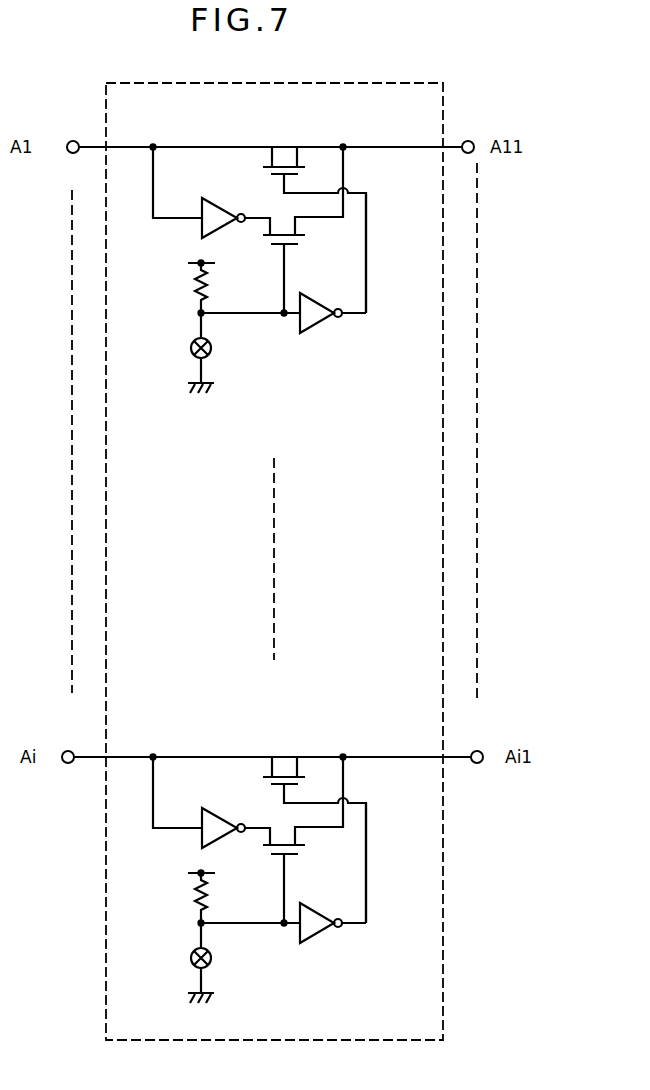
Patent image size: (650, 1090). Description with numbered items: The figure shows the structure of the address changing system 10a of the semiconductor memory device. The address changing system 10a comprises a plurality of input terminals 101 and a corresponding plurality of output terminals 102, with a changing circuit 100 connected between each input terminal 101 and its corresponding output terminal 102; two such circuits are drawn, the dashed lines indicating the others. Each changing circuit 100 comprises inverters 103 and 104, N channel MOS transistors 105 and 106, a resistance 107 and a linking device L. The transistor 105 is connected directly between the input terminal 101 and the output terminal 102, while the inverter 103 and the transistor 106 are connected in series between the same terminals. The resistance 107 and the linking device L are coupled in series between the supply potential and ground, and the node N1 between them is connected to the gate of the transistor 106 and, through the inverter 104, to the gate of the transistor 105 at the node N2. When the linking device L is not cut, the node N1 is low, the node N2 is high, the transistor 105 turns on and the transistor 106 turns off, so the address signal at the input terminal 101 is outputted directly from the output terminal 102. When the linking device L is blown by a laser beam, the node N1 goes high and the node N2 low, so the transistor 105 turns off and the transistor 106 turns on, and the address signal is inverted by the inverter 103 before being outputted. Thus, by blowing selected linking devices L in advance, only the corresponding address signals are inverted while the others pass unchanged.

The address changing system 10a is at (378, 83).
The changing circuit 100 is at (260, 357).
The input terminal 101 is at (66, 143).
The output terminal 102 is at (474, 143).
The inverter 103 is at (226, 201).
The inverter 104 is at (318, 329).
The N channel MOS transistor 105 is at (280, 147).
The N channel MOS transistor 106 is at (298, 244).
The resistance 107 is at (195, 286).
The node N1 is at (219, 312).
The node N2 is at (368, 214).
The linking device L is at (189, 343).